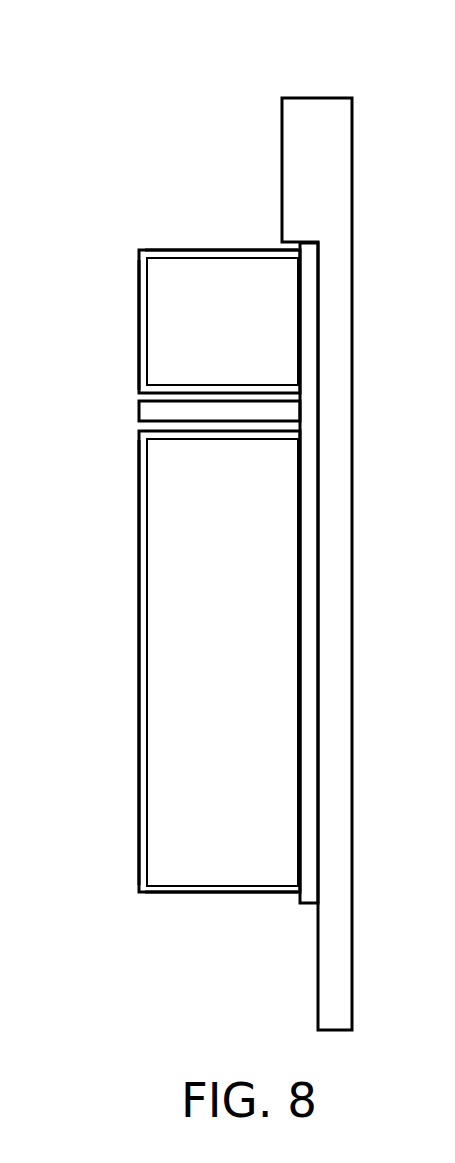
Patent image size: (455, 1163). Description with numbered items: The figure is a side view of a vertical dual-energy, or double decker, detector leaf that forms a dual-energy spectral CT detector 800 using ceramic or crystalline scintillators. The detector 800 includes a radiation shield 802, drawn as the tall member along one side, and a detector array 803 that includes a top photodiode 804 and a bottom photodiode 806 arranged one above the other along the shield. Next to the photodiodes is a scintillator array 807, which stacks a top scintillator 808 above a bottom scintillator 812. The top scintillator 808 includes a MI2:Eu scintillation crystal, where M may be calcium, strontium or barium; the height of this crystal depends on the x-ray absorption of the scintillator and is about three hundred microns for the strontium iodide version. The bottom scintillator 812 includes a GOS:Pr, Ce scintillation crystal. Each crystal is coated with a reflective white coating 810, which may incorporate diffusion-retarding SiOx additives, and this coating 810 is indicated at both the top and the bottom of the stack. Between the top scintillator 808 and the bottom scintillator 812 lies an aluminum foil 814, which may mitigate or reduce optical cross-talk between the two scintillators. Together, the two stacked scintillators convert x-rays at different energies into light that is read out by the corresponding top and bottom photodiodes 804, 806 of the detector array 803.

The dual-energy spectral CT detector 800 is at (113, 95).
The radiation shield 802 is at (355, 202).
The detector array 803 is at (337, 457).
The top photodiode 804 is at (298, 323).
The bottom photodiode 806 is at (298, 630).
The scintillator array 807 is at (140, 219).
The top scintillator 808 is at (153, 311).
The reflective white coating 810 is at (215, 250).
The bottom scintillator 812 is at (153, 489).
The aluminum foil 814 is at (138, 407).